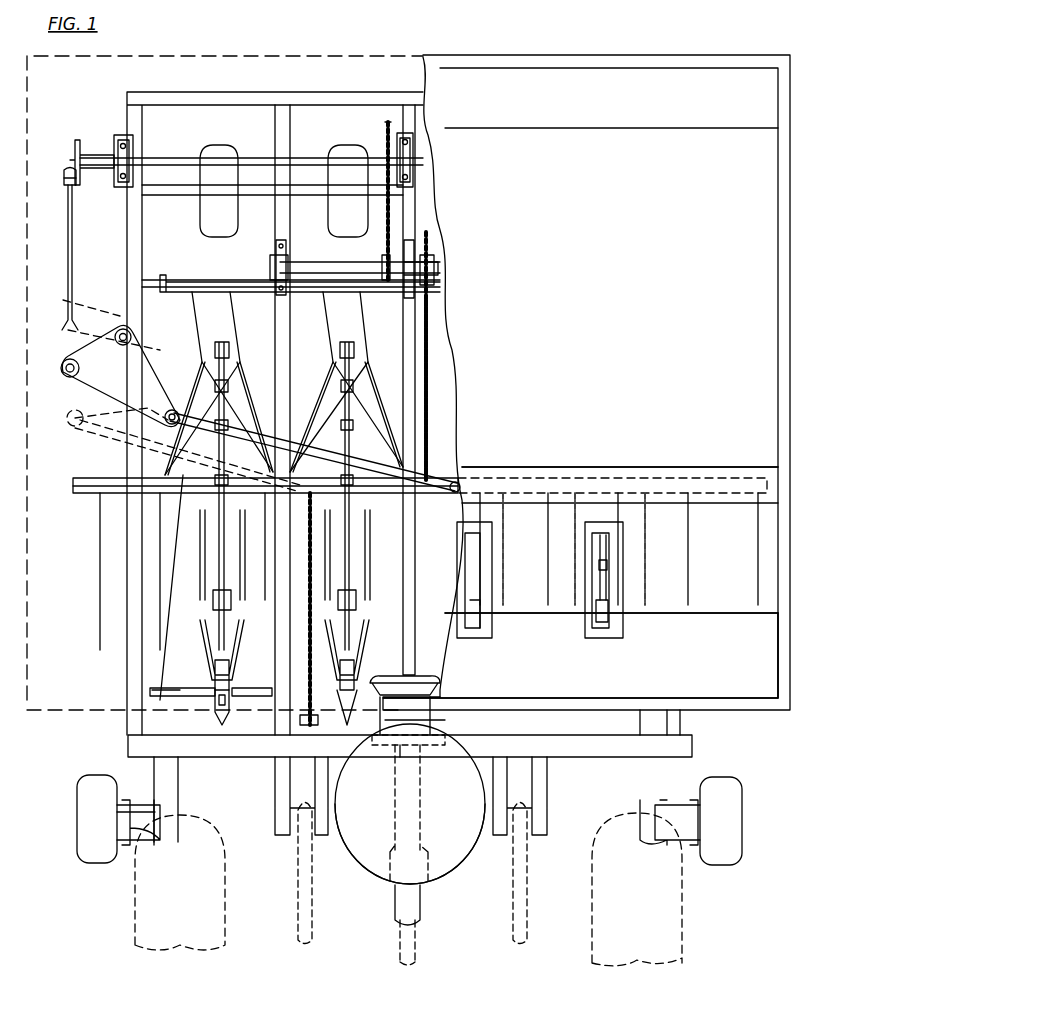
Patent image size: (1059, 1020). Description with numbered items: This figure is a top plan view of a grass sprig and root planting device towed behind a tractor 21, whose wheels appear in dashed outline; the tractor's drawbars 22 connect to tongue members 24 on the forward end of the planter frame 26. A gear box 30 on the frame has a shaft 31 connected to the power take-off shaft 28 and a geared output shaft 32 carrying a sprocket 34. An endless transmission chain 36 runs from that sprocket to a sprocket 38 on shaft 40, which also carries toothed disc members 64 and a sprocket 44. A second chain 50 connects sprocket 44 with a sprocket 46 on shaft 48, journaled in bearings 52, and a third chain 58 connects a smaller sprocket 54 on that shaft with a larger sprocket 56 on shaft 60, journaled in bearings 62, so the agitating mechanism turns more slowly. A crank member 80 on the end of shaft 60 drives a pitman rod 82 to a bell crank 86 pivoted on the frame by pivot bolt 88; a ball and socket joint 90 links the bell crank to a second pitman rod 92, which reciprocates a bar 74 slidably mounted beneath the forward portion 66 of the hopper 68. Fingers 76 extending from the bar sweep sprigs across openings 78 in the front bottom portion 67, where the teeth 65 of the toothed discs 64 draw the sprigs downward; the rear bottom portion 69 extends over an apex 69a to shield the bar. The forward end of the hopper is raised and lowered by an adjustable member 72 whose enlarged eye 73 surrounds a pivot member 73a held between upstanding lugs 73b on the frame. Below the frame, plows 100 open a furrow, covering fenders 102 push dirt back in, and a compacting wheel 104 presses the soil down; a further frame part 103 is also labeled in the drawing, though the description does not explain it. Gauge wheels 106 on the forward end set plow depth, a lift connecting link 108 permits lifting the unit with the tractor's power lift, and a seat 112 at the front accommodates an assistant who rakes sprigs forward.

The tractor 21 is at (235, 944).
The drawbars 22 is at (305, 895).
The tongue members 24 is at (275, 812).
The frame 26 is at (280, 100).
The power take-off shaft 28 is at (418, 908).
The gear box 30 is at (445, 748).
The shaft 31 is at (415, 824).
The shaft 32 is at (305, 733).
The sprocket 34 is at (318, 725).
The endless transmission chain 36 is at (308, 634).
The sprocket 38 is at (318, 478).
The shaft 40 is at (180, 500).
The sprocket 44 is at (440, 480).
The sprocket 46 is at (428, 246).
The shaft 48 is at (436, 270).
The endless transmission chain 50 is at (430, 312).
The bearings 52 is at (272, 262).
The sprocket 54 is at (385, 257).
The sprocket 56 is at (386, 130).
The endless transmission chain 58 is at (388, 210).
The shaft 60 is at (160, 158).
The bearings 62 is at (116, 140).
The toothed disc members 64 is at (604, 547).
The teeth 65 is at (607, 568).
The forward portion 66 is at (752, 651).
The bottom portion 67 is at (730, 690).
The hopper 68 is at (663, 45).
The rear bottom portion 69 is at (686, 299).
The apex 69a is at (678, 467).
The adjustable member 72 is at (214, 708).
The enlarged eye 73 is at (200, 672).
The pivot member 73a is at (178, 688).
The upstanding lugs 73b is at (270, 688).
The bar 74 is at (462, 480).
The fingers 76 is at (755, 572).
The openings 78 is at (476, 628).
The crank member 80 is at (73, 172).
The pitman rod 82 is at (72, 272).
The bell crank 86 is at (142, 400).
The pivot bolt 88 is at (121, 327).
The ball and socket joint 90 is at (170, 412).
The pitman rod 92 is at (227, 445).
The plows 100 is at (395, 680).
The covering fenders 102 is at (195, 320).
The frame strut 103 is at (178, 192).
The compacting wheel 104 is at (215, 147).
The gauge wheel 106 is at (90, 850).
The lift connecting link 108 is at (412, 946).
The seat 112 is at (382, 870).